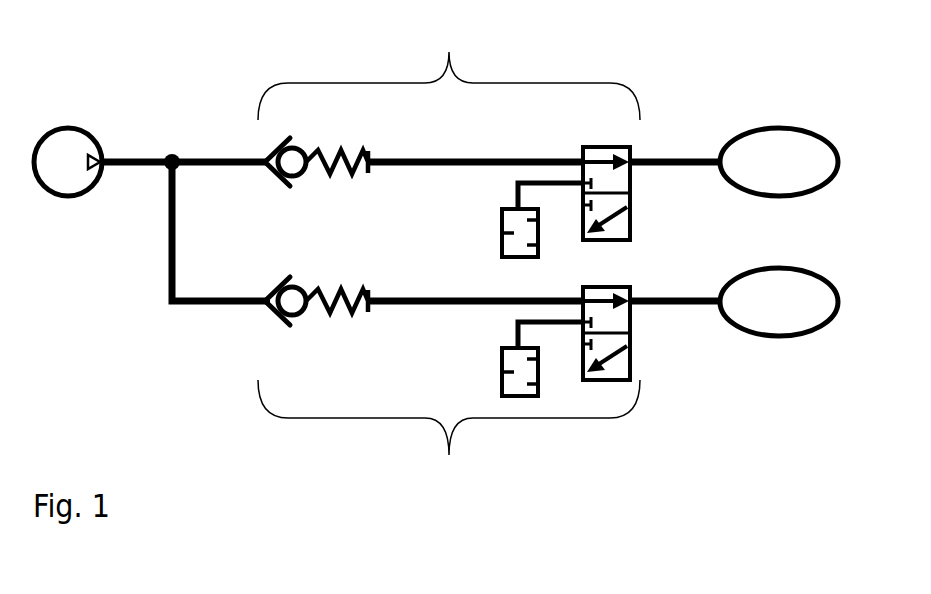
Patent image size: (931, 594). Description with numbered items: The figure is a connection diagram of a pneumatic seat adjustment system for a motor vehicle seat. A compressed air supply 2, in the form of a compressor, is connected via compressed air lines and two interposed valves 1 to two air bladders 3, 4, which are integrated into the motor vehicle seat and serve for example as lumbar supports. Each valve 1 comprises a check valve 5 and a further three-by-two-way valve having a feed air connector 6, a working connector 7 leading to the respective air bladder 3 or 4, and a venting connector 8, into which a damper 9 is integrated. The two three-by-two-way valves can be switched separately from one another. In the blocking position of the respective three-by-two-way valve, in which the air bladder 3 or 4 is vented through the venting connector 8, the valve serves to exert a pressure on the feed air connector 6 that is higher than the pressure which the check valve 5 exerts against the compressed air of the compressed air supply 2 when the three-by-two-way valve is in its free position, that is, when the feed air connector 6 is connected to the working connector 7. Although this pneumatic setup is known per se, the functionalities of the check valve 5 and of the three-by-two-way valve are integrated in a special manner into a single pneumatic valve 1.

The valve 1 is at (449, 254).
The compressed air supply 2 is at (72, 127).
The air bladder 3 is at (781, 128).
The air bladder 4 is at (780, 268).
The check valve 5 is at (338, 180).
The feed air connector 6 is at (635, 146).
The working connector 7 is at (580, 147).
The venting connector 8 is at (580, 192).
The damper 9 is at (500, 233).